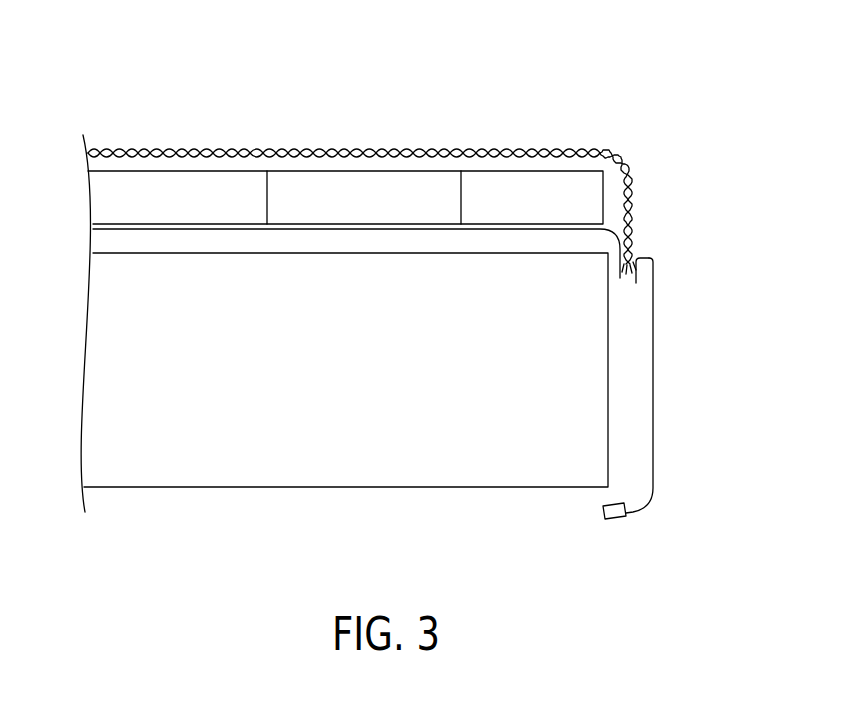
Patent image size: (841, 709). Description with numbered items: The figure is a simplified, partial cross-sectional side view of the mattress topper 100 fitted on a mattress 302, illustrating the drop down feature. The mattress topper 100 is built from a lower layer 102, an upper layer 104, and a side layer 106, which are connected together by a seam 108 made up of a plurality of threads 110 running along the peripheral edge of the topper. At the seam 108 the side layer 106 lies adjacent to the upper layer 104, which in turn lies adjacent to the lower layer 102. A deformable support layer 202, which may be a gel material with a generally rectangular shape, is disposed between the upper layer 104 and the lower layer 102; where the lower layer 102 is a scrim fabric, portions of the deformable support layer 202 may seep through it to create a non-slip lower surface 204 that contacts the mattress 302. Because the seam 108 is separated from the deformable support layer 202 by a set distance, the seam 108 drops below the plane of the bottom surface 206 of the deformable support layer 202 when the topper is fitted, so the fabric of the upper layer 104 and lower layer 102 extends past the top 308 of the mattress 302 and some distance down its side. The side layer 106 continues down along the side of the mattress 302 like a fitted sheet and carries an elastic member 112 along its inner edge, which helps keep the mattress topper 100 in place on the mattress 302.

The mattress topper 100 is at (590, 105).
The lower layer 102 is at (148, 232).
The upper layer 104 is at (117, 148).
The side layer 106 is at (653, 400).
The seam 108 is at (650, 244).
The threads 110 is at (650, 284).
The elastic member 112 is at (603, 513).
The deformable support layer 202 is at (220, 183).
The lower surface 204 is at (265, 236).
The bottom surface 206 is at (214, 232).
The mattress 302 is at (107, 433).
The top 308 is at (384, 246).